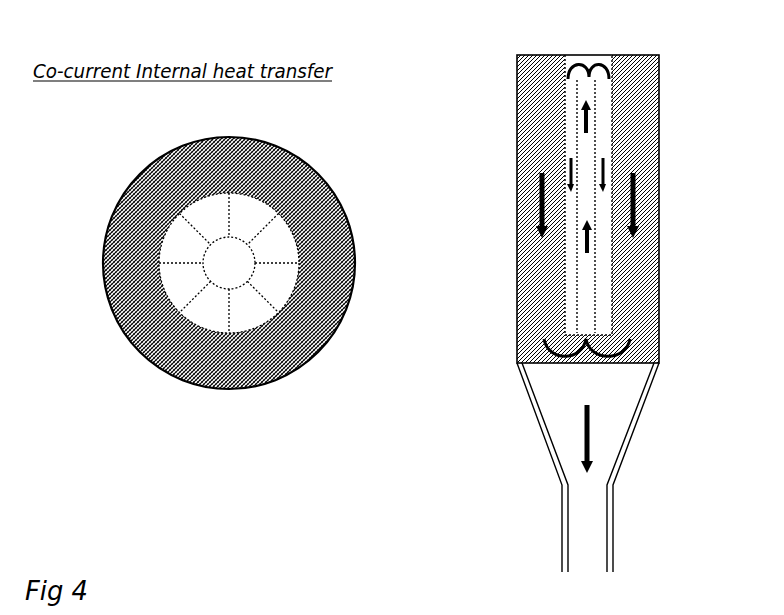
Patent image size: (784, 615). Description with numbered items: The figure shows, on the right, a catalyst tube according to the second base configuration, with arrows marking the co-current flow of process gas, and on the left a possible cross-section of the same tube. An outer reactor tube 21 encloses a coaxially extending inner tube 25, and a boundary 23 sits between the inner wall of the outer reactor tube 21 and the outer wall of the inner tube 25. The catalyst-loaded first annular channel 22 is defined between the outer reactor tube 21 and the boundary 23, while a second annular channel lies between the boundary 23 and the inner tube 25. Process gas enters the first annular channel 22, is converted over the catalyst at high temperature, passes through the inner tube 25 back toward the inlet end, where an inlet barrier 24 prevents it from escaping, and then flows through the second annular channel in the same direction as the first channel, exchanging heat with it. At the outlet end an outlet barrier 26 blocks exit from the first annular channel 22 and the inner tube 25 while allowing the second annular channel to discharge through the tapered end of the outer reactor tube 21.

The outer reactor tube 21 is at (659, 165).
The first annular channel 22 is at (635, 307).
The boundary 23 is at (612, 257).
The inlet barrier 24 is at (585, 57).
The inner tube 25 is at (597, 147).
The outlet barrier 26 is at (583, 362).